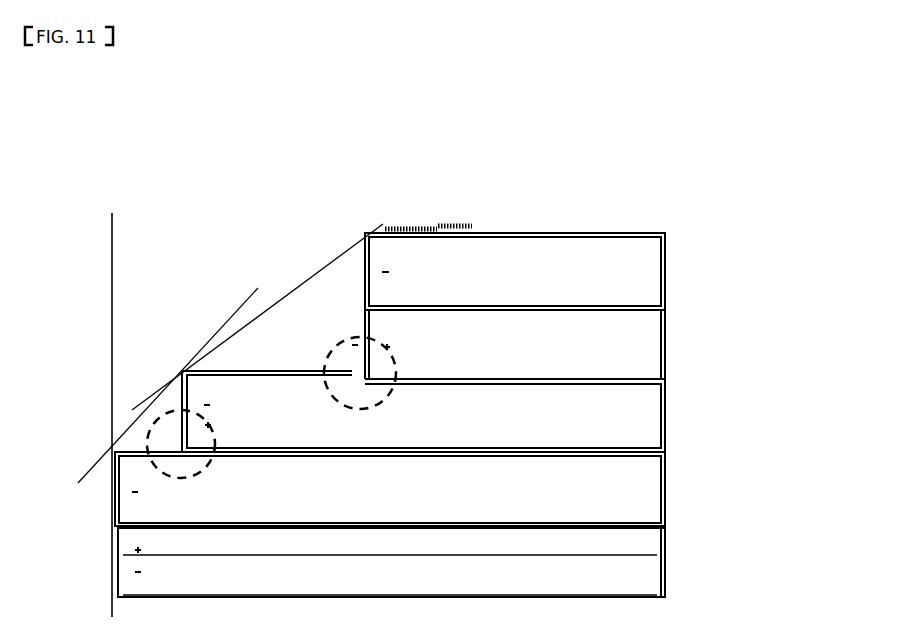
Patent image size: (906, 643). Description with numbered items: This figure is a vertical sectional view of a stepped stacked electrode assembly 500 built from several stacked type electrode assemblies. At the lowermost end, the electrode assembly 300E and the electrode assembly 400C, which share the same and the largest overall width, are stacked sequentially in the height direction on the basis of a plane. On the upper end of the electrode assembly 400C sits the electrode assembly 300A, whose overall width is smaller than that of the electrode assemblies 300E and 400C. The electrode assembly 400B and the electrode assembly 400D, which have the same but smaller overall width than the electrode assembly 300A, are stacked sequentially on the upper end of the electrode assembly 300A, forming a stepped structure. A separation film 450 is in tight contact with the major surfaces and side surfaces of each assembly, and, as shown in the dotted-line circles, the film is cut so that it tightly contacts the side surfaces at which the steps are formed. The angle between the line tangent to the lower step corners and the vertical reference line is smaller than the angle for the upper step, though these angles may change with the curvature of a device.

The display device 500 is at (62, 128).
The separation film 450 is at (567, 232).
The electrode assembly 400D is at (615, 277).
The electrode assembly 400B is at (633, 347).
The electrode assembly 300A is at (632, 402).
The electrode assembly 400C is at (623, 492).
The electrode assembly 300E is at (612, 546).